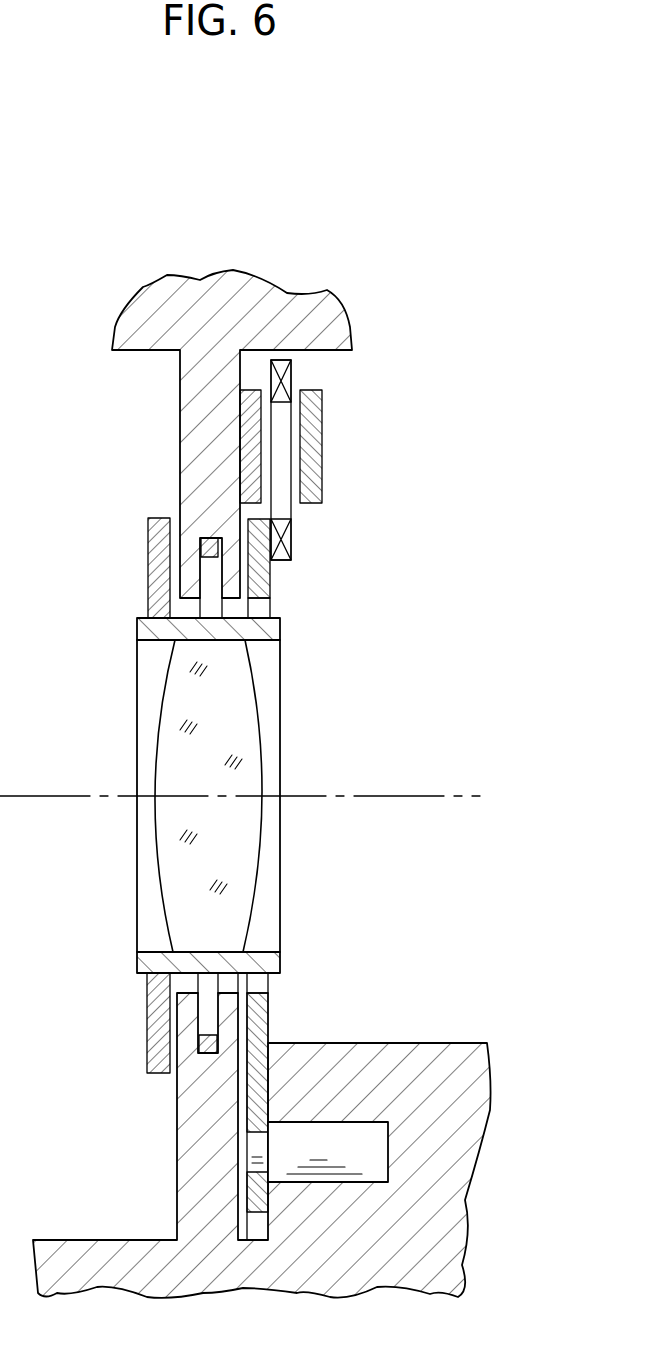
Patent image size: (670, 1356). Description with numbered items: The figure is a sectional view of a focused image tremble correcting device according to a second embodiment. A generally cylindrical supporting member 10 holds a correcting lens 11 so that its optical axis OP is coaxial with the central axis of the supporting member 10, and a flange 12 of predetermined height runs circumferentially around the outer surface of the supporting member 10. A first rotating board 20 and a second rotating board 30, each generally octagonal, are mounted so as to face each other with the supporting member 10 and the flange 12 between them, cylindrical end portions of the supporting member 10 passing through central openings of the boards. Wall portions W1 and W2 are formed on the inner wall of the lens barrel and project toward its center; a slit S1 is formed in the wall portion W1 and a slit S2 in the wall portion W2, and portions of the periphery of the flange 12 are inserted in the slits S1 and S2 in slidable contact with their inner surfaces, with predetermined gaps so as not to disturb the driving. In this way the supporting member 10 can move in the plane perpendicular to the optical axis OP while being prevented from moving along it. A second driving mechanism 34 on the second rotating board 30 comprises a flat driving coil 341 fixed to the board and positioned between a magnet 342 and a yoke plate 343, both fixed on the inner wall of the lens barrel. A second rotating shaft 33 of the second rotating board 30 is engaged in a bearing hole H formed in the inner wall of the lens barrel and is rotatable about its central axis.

The second driving mechanism 34 is at (315, 392).
The driving coil 341 is at (278, 367).
The magnet 342 is at (250, 403).
The yoke plate 343 is at (312, 445).
The wall portion W1 is at (208, 423).
The slit S1 is at (210, 546).
The first rotating board 20 is at (116, 579).
The supporting member 10 is at (122, 641).
The flange 12 is at (207, 600).
The correcting lens 11 is at (228, 838).
The optical axis OP is at (436, 793).
The second rotating board 30 is at (290, 997).
The slit S2 is at (207, 1040).
The wall portion W2 is at (207, 1153).
The second rotating shaft 33 is at (305, 1122).
The bearing hole H is at (378, 1125).